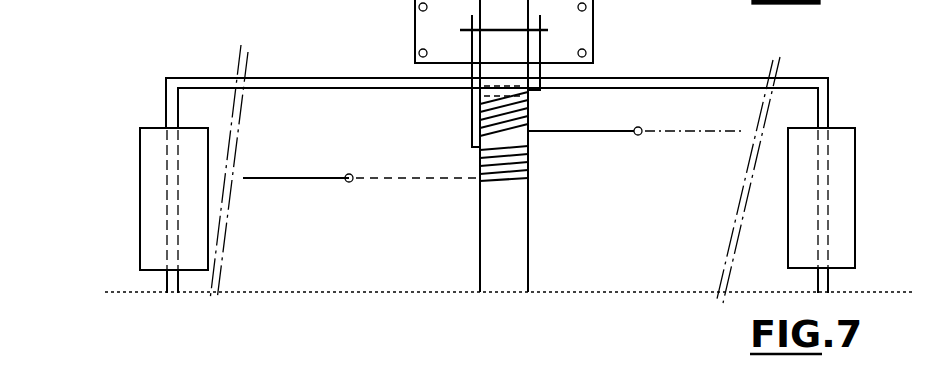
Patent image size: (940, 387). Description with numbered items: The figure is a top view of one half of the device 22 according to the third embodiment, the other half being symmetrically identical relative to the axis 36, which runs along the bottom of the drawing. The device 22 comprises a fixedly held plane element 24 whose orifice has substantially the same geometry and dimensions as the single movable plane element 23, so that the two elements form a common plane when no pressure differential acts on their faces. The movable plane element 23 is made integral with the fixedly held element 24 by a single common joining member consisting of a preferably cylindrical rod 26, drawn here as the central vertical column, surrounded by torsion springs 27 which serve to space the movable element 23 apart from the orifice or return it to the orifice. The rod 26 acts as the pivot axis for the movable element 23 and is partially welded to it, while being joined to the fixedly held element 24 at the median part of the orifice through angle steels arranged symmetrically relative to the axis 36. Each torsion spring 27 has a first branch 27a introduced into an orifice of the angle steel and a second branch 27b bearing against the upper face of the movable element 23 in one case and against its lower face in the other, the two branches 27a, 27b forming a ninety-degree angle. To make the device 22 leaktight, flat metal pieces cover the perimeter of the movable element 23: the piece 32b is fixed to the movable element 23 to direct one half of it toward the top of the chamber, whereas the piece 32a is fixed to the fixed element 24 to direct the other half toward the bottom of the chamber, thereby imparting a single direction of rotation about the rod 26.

The device 22 is at (190, 58).
The movable plane element 23 is at (367, 280).
The fixedly held plane element 24 is at (502, 172).
The rod 26 is at (522, 280).
The torsion spring 27 is at (538, 108).
The branch of the torsion spring 27a is at (462, 44).
The second branch of the torsion spring 27b is at (318, 178).
The metal piece 32a is at (148, 145).
The metal piece 32b is at (845, 157).
The axis 36 is at (127, 300).